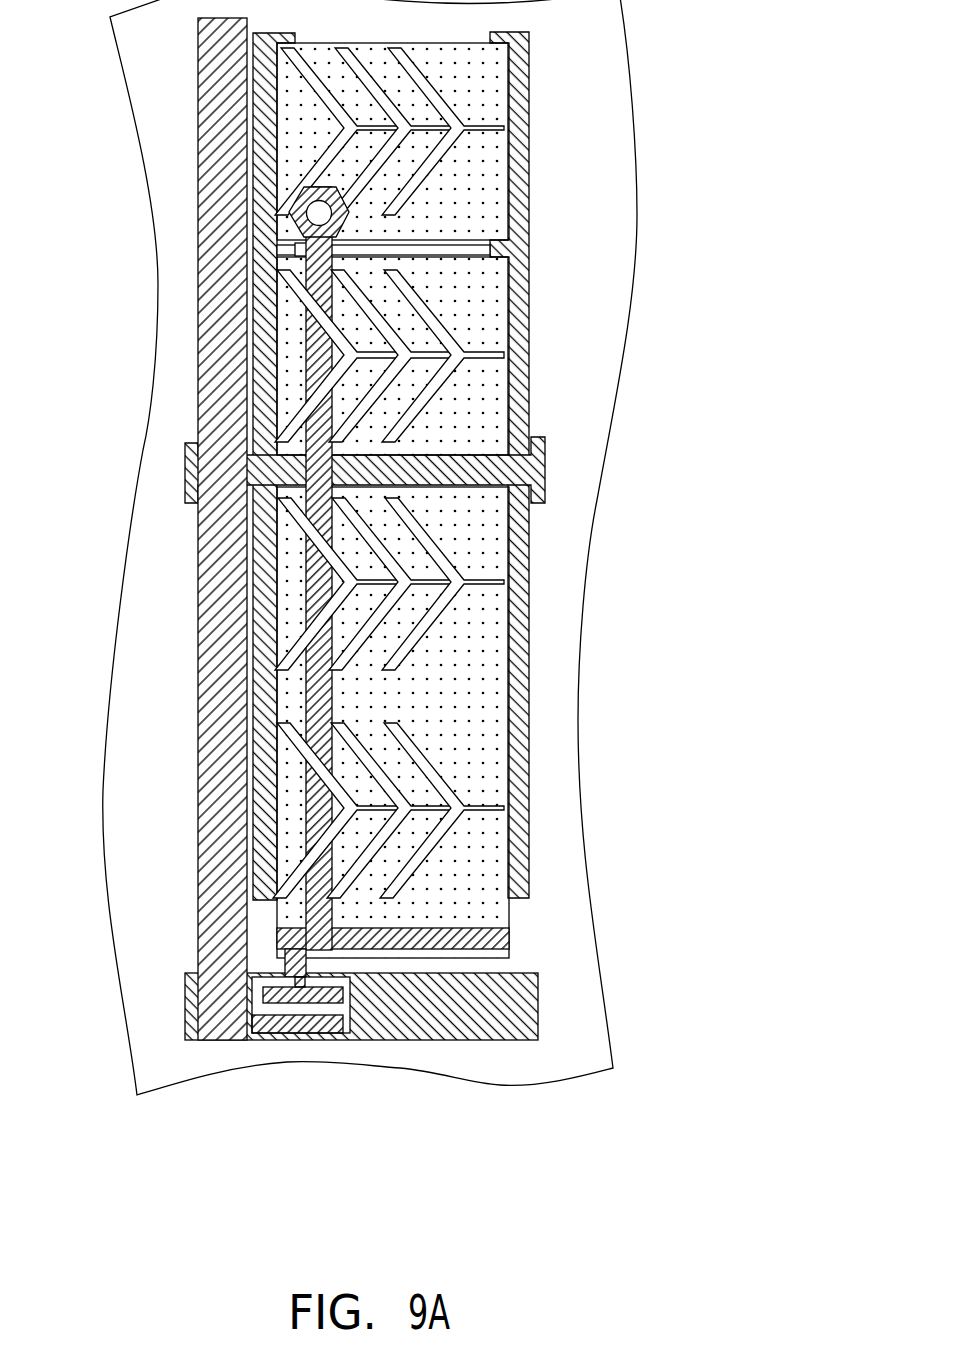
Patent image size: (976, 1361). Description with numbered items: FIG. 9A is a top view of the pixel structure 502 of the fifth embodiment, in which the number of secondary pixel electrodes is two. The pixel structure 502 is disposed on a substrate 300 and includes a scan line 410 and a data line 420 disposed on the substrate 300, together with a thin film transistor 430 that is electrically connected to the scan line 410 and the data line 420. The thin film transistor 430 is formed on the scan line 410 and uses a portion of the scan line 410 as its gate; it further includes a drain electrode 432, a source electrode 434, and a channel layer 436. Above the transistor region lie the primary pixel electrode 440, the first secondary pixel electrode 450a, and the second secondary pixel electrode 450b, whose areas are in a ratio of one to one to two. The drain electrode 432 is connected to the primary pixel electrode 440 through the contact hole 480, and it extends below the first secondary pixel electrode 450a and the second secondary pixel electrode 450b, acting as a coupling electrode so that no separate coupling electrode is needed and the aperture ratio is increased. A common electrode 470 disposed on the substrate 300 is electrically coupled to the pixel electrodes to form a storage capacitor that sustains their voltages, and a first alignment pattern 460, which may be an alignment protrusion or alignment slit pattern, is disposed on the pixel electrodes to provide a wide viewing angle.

The substrate 300 is at (547, 1063).
The scan line 410 is at (498, 1001).
The data line 420 is at (228, 358).
The thin film transistor 430 is at (332, 716).
The drain electrode 432 is at (312, 997).
The source electrode 434 is at (287, 1095).
The channel layer 436 is at (347, 1023).
The primary pixel electrode 440 is at (460, 190).
The first secondary pixel electrode 450a is at (464, 296).
The second secondary pixel electrode 450b is at (464, 701).
The first alignment pattern 460 is at (442, 100).
The common electrode 470 is at (524, 469).
The contact hole 480 is at (306, 213).
The pixel structure 502 is at (711, 1175).